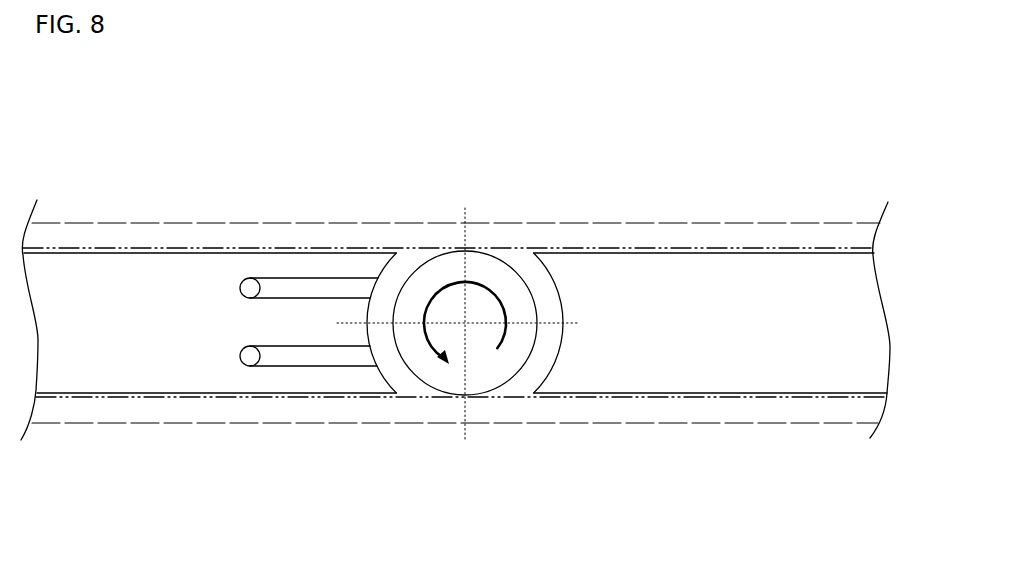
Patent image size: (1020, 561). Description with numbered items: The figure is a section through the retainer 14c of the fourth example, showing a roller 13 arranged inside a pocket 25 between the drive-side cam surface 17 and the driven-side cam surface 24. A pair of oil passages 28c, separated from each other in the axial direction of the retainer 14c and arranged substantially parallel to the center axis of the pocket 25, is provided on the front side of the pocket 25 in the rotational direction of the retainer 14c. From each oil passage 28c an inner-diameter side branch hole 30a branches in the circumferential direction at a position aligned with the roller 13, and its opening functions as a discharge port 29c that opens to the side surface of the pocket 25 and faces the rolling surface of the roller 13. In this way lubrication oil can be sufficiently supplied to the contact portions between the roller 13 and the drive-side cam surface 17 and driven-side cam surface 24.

The roller 13 is at (508, 284).
The retainer 14c is at (779, 253).
The drive-side cam surface 17 is at (170, 392).
The driven-side cam surface 24 is at (165, 254).
The pocket 25 is at (548, 288).
The oil passage 28c is at (247, 278).
The discharge port 29c is at (375, 290).
The inner-diameter side branch hole 30a is at (327, 278).